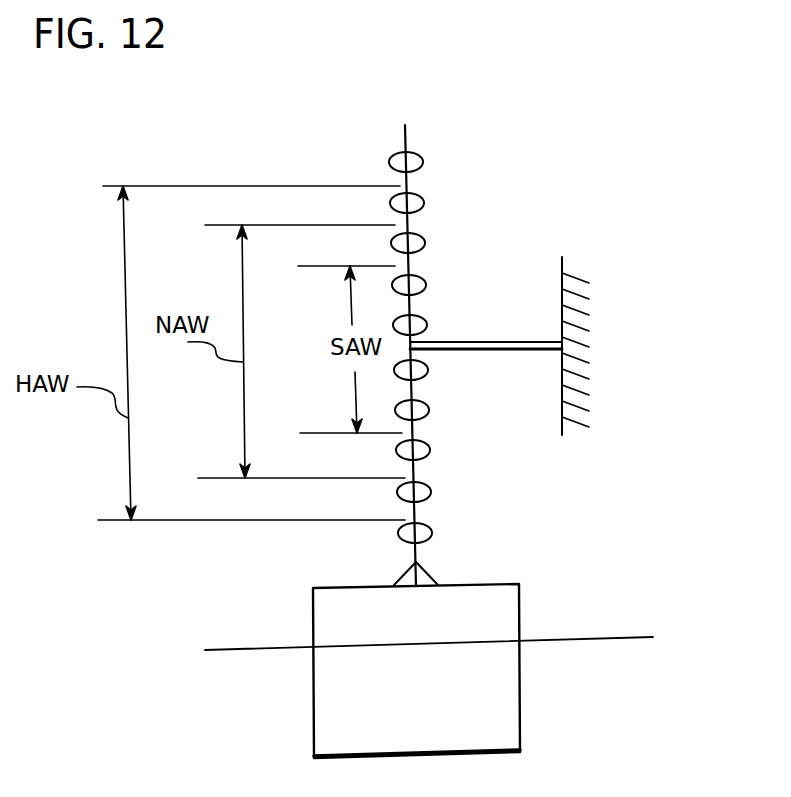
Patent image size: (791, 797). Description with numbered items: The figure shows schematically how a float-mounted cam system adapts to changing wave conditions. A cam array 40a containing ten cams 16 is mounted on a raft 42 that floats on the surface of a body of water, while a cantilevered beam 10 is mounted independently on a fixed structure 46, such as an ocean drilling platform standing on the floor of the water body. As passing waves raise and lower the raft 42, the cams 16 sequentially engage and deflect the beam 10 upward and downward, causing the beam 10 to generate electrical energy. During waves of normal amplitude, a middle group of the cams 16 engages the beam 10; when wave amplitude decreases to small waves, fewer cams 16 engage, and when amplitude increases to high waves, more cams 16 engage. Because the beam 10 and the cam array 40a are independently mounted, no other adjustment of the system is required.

The cam array 40a is at (403, 140).
The cams 16 is at (422, 160).
The fixed structure 46 is at (562, 273).
The cantilevered beam 10 is at (510, 356).
The raft 42 is at (327, 626).